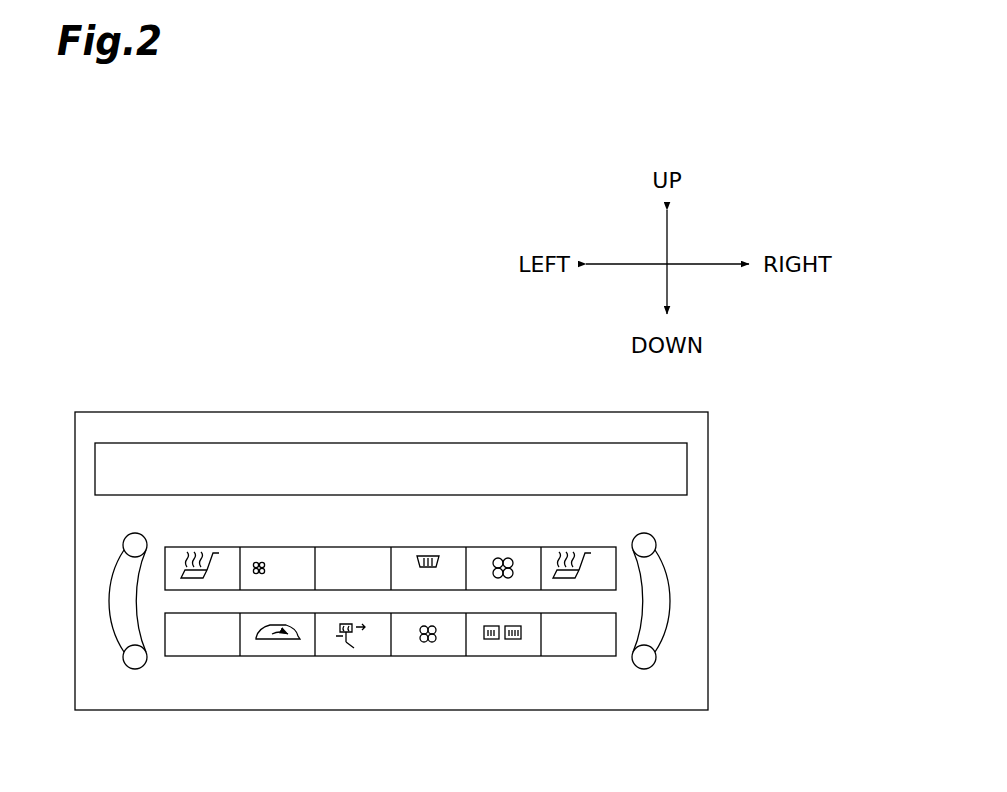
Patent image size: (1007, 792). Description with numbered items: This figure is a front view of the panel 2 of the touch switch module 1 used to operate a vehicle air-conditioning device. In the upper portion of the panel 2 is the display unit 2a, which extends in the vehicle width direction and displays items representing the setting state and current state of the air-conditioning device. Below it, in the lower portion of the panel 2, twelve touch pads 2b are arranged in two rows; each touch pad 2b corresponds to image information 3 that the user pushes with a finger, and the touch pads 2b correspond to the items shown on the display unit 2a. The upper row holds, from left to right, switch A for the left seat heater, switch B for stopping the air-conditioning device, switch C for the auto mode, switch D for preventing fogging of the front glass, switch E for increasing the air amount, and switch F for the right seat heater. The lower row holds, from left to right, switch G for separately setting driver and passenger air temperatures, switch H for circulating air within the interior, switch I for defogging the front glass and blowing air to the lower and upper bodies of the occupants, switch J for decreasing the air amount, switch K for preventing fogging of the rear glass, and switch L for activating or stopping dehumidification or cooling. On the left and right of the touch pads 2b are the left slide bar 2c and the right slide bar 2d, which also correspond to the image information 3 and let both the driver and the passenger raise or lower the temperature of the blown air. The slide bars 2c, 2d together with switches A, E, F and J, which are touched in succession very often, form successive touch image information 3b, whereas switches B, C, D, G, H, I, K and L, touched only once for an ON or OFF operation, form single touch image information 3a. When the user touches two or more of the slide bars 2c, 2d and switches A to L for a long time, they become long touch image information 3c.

The touch switch module 1 is at (283, 344).
The panel 2 is at (127, 430).
The display unit 2a is at (110, 467).
The touch pads 2b is at (125, 521).
The left slide bar 2c is at (135, 672).
The right slide bar 2d is at (646, 672).
The image information 3 is at (360, 573).
The single touch image information 3a is at (394, 564).
The successive touch image information 3b is at (360, 638).
The long touch image information 3c is at (360, 573).
The switch A is at (191, 553).
The switch B is at (273, 551).
The switch C is at (350, 552).
The switch D is at (423, 552).
The switch E is at (523, 556).
The switch F is at (585, 556).
The switch G is at (197, 648).
The switch H is at (276, 649).
The switch I is at (338, 649).
The switch J is at (417, 649).
The switch K is at (503, 649).
The switch L is at (565, 649).